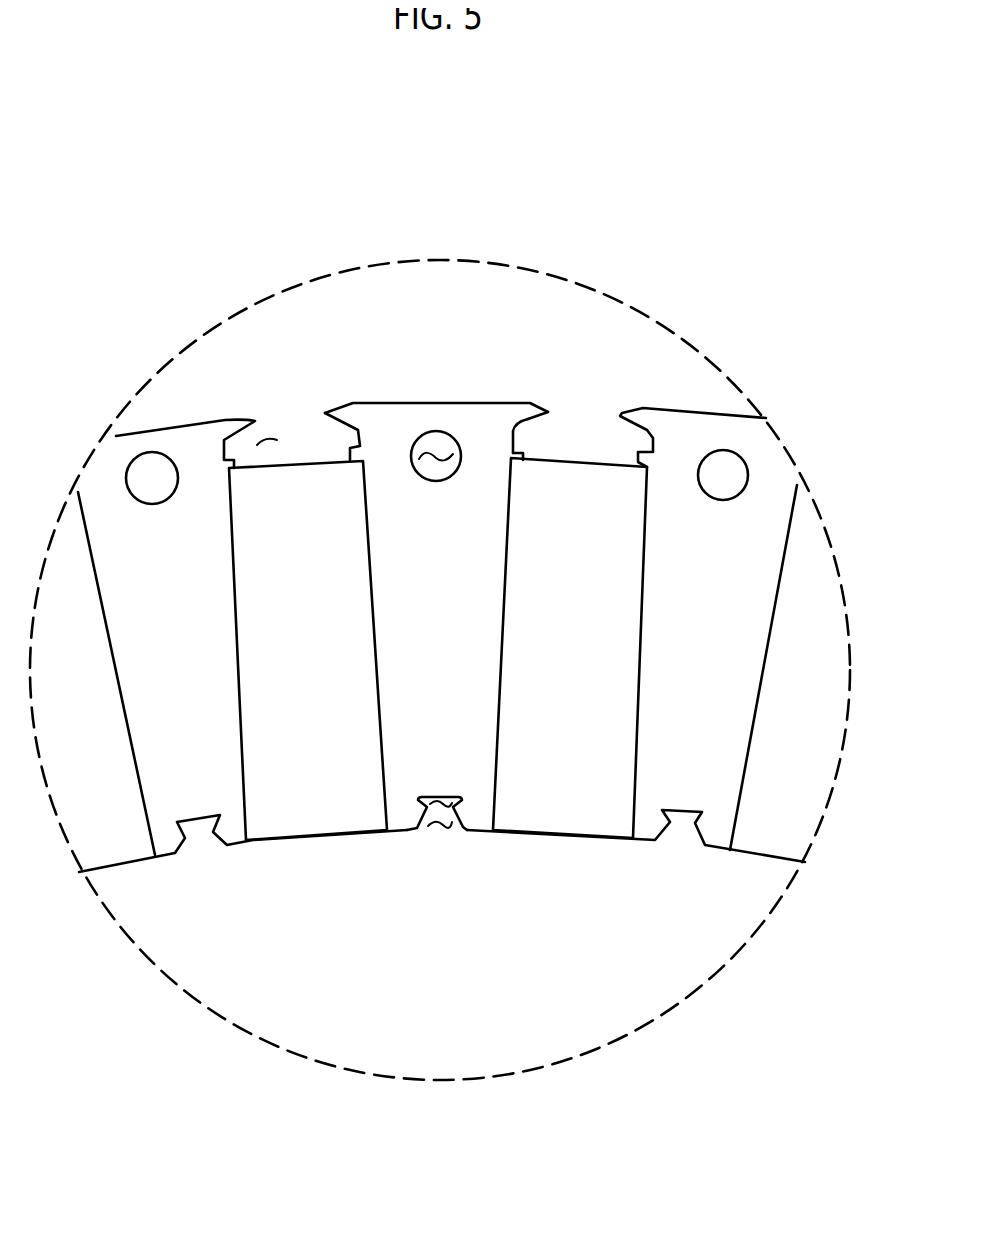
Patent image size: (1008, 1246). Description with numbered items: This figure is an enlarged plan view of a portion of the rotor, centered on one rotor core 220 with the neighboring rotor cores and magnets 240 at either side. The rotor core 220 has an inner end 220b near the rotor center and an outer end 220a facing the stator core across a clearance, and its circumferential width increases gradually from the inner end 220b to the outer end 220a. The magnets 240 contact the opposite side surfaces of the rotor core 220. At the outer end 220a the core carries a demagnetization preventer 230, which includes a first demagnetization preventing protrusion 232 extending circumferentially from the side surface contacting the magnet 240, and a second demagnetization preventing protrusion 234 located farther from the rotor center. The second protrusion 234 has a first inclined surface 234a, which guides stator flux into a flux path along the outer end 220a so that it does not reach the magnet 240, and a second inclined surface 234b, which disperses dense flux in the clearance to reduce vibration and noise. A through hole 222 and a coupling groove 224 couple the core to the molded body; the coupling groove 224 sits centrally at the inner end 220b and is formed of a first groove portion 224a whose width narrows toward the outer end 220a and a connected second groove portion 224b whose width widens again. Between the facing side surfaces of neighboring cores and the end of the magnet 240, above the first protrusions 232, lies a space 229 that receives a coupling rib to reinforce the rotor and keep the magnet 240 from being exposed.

The rotor core 220 is at (526, 574).
The outer end 220a is at (367, 403).
The inner end 220b is at (402, 829).
The through hole 222 is at (442, 450).
The coupling groove 224 is at (526, 904).
The first groove portion 224a is at (443, 826).
The second groove portion 224b is at (445, 797).
The space 229 is at (307, 438).
The demagnetization preventer 230 is at (667, 288).
The first demagnetization preventing protrusion 232 is at (527, 454).
The second demagnetization preventing protrusion 234 is at (620, 285).
The first inclined surface 234a is at (535, 423).
The second inclined surface 234b is at (520, 405).
The magnet 240 is at (308, 800).